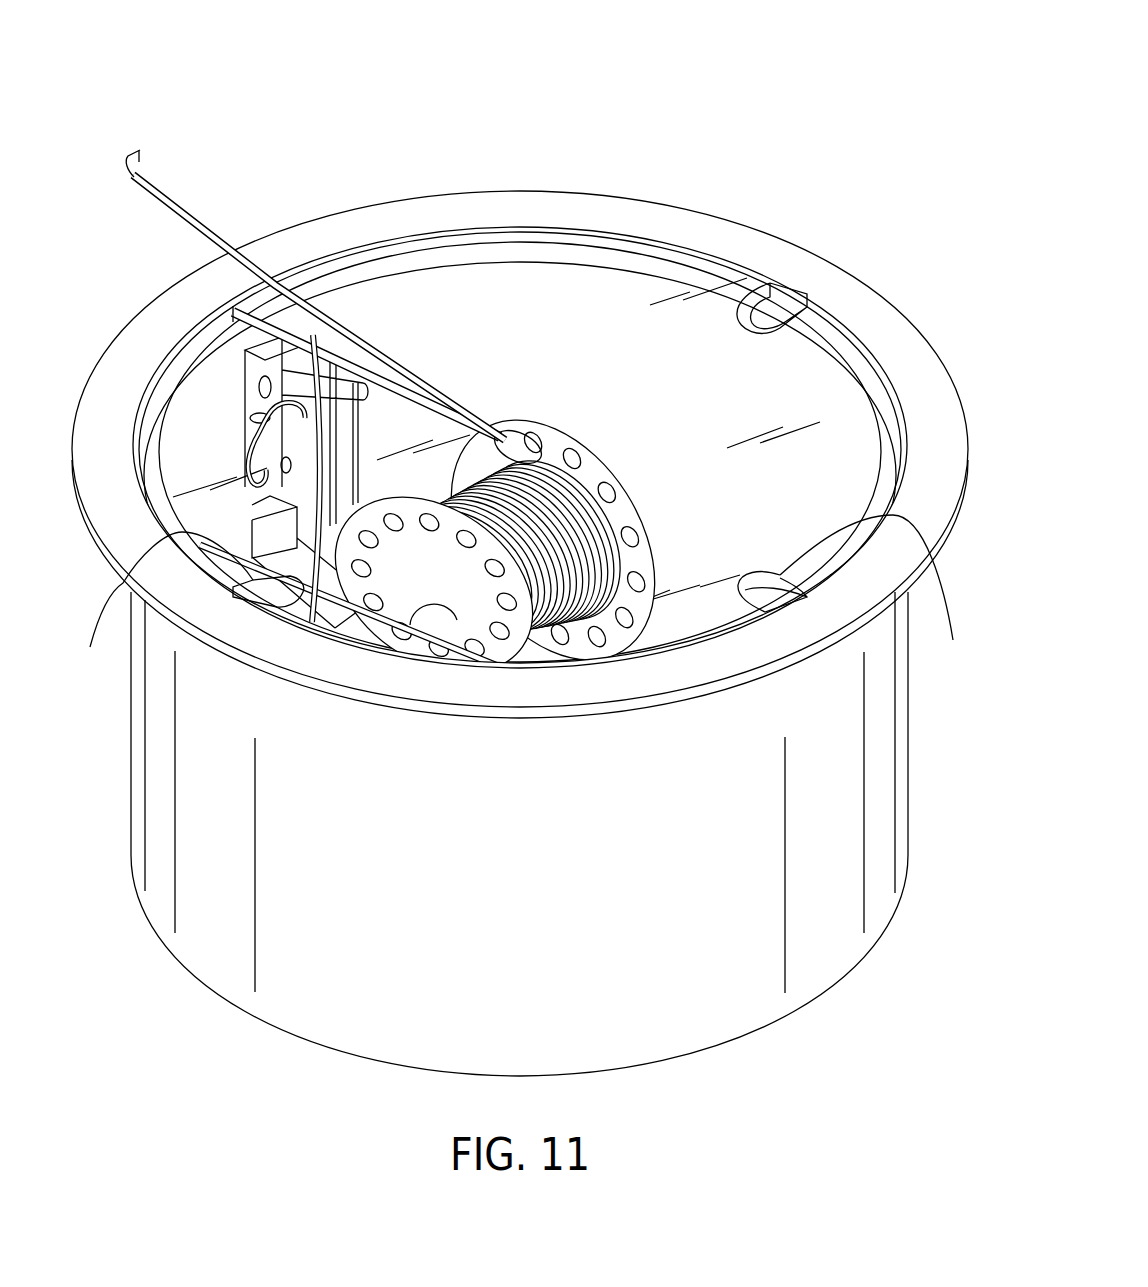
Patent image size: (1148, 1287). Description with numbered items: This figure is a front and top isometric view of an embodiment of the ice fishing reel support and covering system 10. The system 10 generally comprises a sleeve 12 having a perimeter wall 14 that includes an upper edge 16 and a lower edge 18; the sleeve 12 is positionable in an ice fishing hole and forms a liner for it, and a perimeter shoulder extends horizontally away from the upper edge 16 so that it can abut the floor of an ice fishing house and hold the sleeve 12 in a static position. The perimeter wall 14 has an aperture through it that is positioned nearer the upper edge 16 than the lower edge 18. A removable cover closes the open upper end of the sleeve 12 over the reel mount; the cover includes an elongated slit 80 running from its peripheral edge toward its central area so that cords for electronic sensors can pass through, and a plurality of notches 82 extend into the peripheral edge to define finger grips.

The ice fishing reel support and covering system 10 is at (729, 130).
The sleeve 12 is at (112, 896).
The perimeter wall 14 is at (832, 857).
The upper edge 16 is at (835, 363).
The lower edge 18 is at (723, 1046).
The elongated slit 80 is at (417, 352).
The notches 82 is at (90, 647).